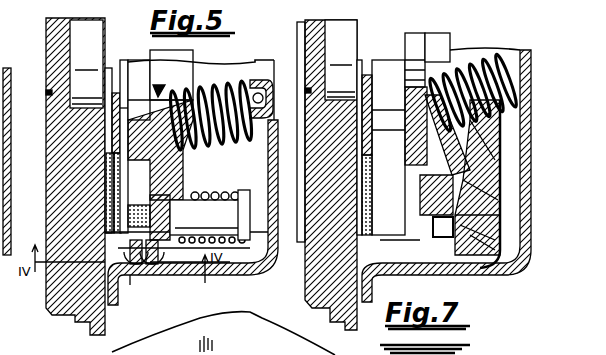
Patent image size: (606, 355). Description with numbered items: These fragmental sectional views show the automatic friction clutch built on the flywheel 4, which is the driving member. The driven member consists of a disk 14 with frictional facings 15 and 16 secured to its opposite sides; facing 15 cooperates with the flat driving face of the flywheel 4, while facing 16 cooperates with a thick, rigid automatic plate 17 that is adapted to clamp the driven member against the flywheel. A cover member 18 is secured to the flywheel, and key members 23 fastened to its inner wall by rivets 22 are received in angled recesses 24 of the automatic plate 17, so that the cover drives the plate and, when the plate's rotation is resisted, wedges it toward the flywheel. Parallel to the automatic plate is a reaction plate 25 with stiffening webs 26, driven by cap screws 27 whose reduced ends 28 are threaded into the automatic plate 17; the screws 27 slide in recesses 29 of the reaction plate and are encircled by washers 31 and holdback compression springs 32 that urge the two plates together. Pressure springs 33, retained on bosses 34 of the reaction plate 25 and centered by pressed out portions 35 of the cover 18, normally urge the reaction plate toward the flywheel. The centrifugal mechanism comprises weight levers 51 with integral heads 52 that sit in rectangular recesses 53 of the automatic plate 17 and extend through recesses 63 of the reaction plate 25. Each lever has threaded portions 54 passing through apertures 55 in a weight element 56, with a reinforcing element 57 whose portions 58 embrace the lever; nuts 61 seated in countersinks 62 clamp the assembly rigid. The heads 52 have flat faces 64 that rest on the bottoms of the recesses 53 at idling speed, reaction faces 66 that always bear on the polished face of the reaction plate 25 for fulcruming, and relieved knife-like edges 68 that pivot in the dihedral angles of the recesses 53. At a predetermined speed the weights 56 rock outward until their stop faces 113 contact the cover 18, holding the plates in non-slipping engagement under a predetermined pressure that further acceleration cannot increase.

In FIG. 5, the flywheel 4 is at (70, 292).
In FIG. 5, the disk 14 is at (117, 92).
In FIG. 7, the disk 14 is at (367, 75).
In FIG. 5, the facing 15 is at (110, 152).
In FIG. 5, the facing 16 is at (115, 170).
In FIG. 7, the facing 16 is at (378, 236).
In FIG. 5, the automatic plate 17 is at (140, 177).
In FIG. 5, the cover member 18 is at (12, 101).
In FIG. 7, the cover member 18 is at (525, 50).
In FIG. 5, the rivets 22 is at (150, 272).
In FIG. 5, the key members 23 is at (132, 278).
In FIG. 5, the recesses 24 is at (107, 232).
In FIG. 5, the reaction plate 25 is at (183, 176).
In FIG. 7, the stiffening webs 26 is at (416, 50).
In FIG. 5, the cap screws 27 is at (213, 206).
In FIG. 5, the reduced end 28 is at (130, 212).
In FIG. 5, the recesses 29 is at (178, 240).
In FIG. 5, the washers 31 is at (190, 204).
In FIG. 5, the compression springs 32 is at (244, 200).
In FIG. 5, the compression springs 33 is at (185, 108).
In FIG. 7, the compression springs 33 is at (465, 65).
In FIG. 5, the bosses 34 is at (160, 85).
In FIG. 5, the pressed out portions 35 is at (274, 108).
In FIG. 7, the weight levers 51 is at (435, 236).
In FIG. 5, the heads 52 is at (278, 220).
In FIG. 5, the recesses 53 is at (276, 135).
In FIG. 7, the threaded portions 54 is at (478, 258).
In FIG. 7, the apertures 55 is at (500, 199).
In FIG. 7, the weight element 56 is at (498, 135).
In FIG. 7, the reinforcing element 57 is at (461, 262).
In FIG. 7, the portions 58 is at (500, 180).
In FIG. 7, the nuts 61 is at (500, 219).
In FIG. 7, the countersinks 62 is at (500, 239).
In FIG. 7, the recesses 63 is at (446, 250).
In FIG. 5, the flat faces 64 is at (278, 182).
In FIG. 7, the reaction faces 66 is at (498, 160).
In FIG. 7, the knife-like edges 68 is at (425, 262).
In FIG. 7, the stop faces 113 is at (500, 268).